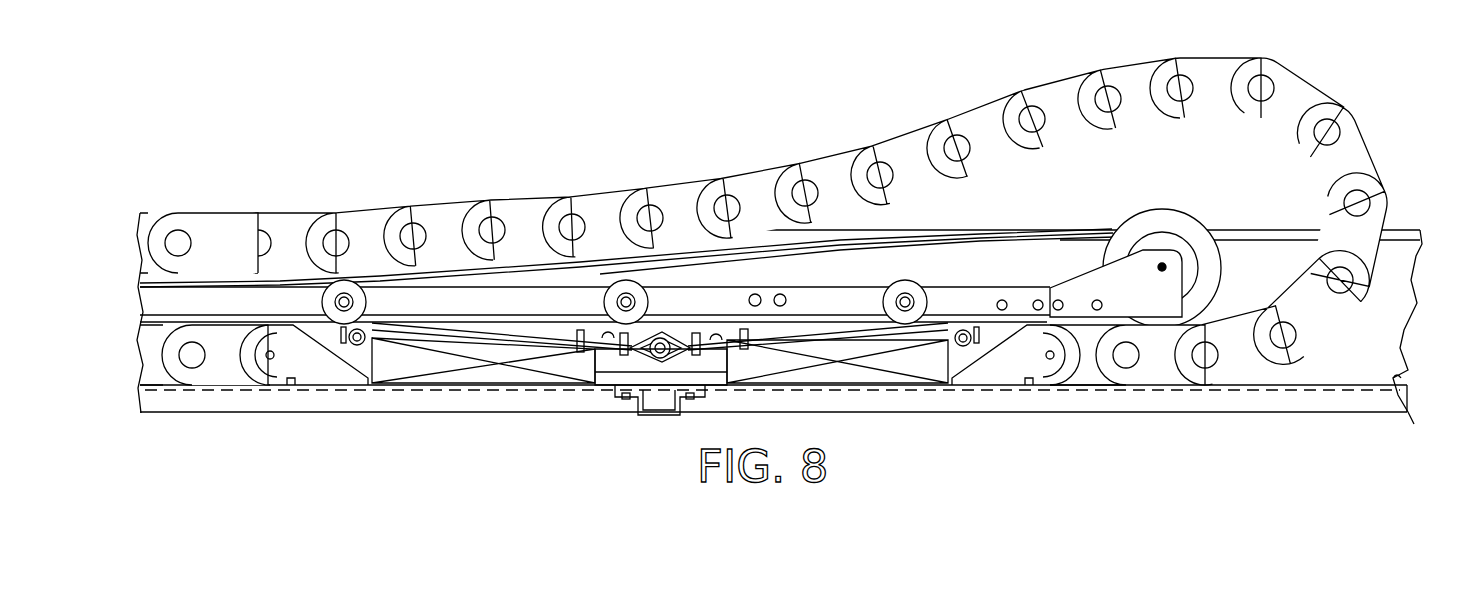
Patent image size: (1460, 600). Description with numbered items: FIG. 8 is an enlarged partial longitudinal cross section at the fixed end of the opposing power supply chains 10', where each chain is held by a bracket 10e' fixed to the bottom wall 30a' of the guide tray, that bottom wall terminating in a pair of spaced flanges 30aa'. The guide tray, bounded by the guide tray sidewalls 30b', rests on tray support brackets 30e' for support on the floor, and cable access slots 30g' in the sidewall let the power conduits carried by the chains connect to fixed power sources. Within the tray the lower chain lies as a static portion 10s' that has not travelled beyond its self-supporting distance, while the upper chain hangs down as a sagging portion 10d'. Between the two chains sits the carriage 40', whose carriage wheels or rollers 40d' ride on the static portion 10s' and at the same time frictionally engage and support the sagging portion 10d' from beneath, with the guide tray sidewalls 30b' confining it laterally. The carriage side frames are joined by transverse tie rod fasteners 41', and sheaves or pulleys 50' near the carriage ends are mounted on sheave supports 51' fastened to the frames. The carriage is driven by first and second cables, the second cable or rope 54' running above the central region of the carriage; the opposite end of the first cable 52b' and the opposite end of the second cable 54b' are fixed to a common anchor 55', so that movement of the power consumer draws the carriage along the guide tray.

The power supply chain 10' is at (763, 200).
The sagging portion 10d' is at (206, 207).
The static portion 10s' is at (215, 392).
The bracket 10e' is at (660, 392).
The carriage 40' is at (595, 259).
The carriage wheels or rollers 40d' is at (624, 232).
The tie rod fasteners 41' is at (760, 211).
The sheaves or pulleys 50' is at (1162, 238).
The sheave supports 51' is at (1108, 353).
The opposite end of first cable 52b' is at (502, 393).
The cable or rope 54' is at (627, 223).
The opposite end of second cable 54b' is at (836, 389).
The anchor 55' is at (620, 396).
The bottom wall 30a' is at (1414, 417).
The spaced flanges 30aa' is at (773, 425).
The guide tray sidewalls 30b' is at (1110, 297).
The tray support brackets 30e' is at (661, 417).
The cable access slots 30g' is at (660, 408).